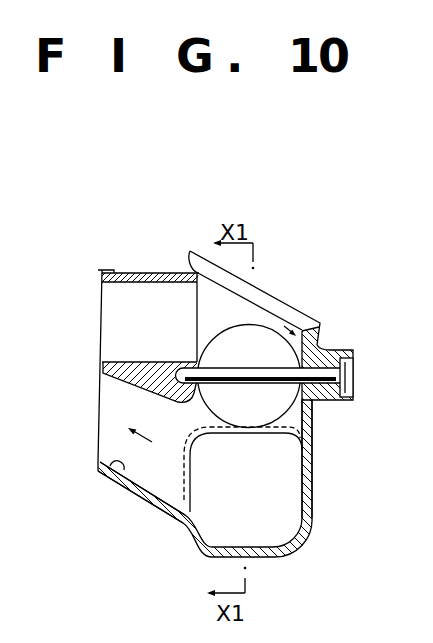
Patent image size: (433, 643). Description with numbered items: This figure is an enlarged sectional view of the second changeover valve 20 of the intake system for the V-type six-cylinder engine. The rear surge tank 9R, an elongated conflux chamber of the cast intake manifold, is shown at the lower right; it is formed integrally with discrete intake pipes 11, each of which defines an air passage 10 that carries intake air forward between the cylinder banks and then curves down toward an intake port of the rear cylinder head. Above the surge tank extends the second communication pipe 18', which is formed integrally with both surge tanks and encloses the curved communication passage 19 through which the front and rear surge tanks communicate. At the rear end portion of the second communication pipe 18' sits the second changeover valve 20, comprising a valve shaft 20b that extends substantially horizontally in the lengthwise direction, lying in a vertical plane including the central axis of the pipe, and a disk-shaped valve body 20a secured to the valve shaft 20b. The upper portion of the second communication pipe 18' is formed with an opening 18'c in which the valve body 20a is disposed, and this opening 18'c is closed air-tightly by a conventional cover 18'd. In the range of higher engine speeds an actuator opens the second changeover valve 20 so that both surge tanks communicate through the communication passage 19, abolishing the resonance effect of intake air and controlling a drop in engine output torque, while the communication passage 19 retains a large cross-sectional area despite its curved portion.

The rear surge tank 9R is at (306, 506).
The air passage 10 is at (100, 470).
The discrete intake pipe 11 is at (129, 482).
The second communication pipe 18' is at (151, 291).
The opening 18'c is at (262, 295).
The cover 18'd is at (341, 338).
The communication passage 19 is at (125, 362).
The second changeover valve 20 is at (320, 325).
The valve body 20a is at (311, 436).
The valve shaft 20b is at (330, 402).